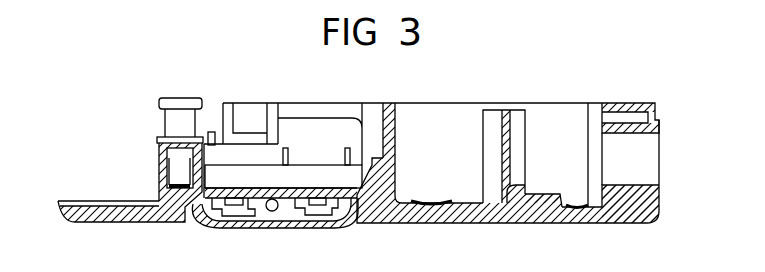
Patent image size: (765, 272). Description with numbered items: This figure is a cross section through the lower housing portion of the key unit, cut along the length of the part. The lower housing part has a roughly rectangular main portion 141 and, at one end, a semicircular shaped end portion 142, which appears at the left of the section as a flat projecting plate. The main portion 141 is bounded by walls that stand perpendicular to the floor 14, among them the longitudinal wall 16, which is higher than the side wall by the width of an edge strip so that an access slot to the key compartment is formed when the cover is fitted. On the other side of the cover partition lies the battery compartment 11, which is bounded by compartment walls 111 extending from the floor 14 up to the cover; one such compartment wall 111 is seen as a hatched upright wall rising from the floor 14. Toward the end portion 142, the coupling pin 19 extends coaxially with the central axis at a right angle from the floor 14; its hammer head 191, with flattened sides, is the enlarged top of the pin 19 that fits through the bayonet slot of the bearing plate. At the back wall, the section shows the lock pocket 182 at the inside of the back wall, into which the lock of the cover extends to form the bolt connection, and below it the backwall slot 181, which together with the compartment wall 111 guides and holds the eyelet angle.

The battery compartment 11 is at (552, 125).
The compartment wall 111 is at (388, 173).
The floor 14 is at (448, 228).
The main portion 141 is at (511, 214).
The semicircular shaped end portion 142 is at (107, 222).
The longitudinal wall 16 is at (438, 103).
The backwall slot 181 is at (625, 167).
The lock pocket 182 is at (622, 118).
The coupling pin 19 is at (165, 144).
The hammer head 191 is at (183, 98).